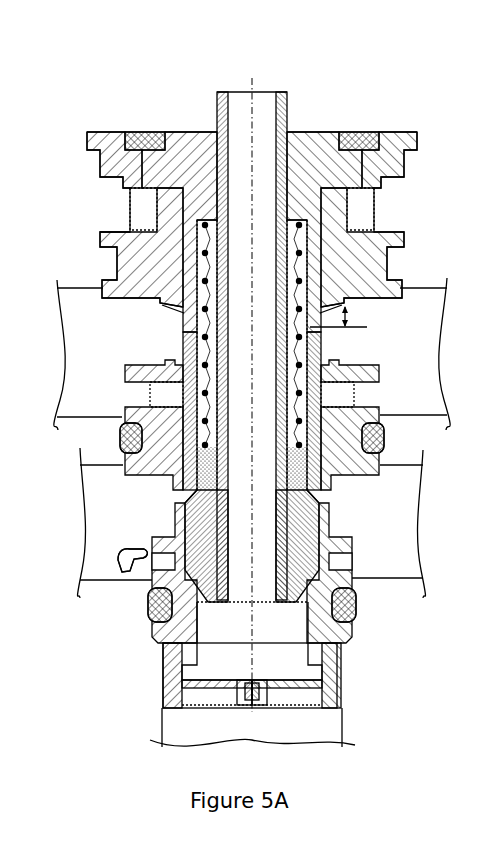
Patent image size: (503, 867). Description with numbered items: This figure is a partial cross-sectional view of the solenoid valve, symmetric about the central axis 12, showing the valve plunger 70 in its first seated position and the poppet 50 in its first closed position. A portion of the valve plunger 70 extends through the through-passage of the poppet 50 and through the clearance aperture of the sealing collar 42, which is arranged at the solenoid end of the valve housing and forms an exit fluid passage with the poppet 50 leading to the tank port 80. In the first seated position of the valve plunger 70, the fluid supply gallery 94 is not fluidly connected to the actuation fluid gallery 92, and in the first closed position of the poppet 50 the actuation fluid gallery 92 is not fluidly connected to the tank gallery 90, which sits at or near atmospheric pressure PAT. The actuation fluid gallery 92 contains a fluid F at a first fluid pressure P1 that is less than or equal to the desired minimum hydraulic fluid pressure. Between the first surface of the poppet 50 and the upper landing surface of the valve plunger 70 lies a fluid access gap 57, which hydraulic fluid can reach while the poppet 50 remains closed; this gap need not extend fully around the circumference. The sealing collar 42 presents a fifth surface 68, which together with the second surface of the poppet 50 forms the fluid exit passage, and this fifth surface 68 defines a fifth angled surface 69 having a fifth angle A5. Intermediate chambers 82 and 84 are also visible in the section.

The central axis 12 is at (252, 103).
The sealing collar 42 is at (312, 148).
The poppet 50 is at (312, 413).
The fluid access gap 57 is at (187, 502).
The fifth surface 68 is at (300, 313).
The fifth angled surface 69 is at (300, 313).
The valve plunger 70 is at (283, 587).
The tank port 80 is at (172, 346).
The intermediate chamber 82 is at (169, 519).
The lower chamber 84 is at (242, 669).
The tank gallery 90 is at (99, 366).
The actuation fluid gallery 92 is at (119, 537).
The fluid supply gallery 94 is at (207, 737).
The fifth angle A5 is at (348, 314).
The atmospheric pressure PAT is at (87, 302).
The fluid F is at (122, 572).
The first fluid pressure P1 is at (122, 572).